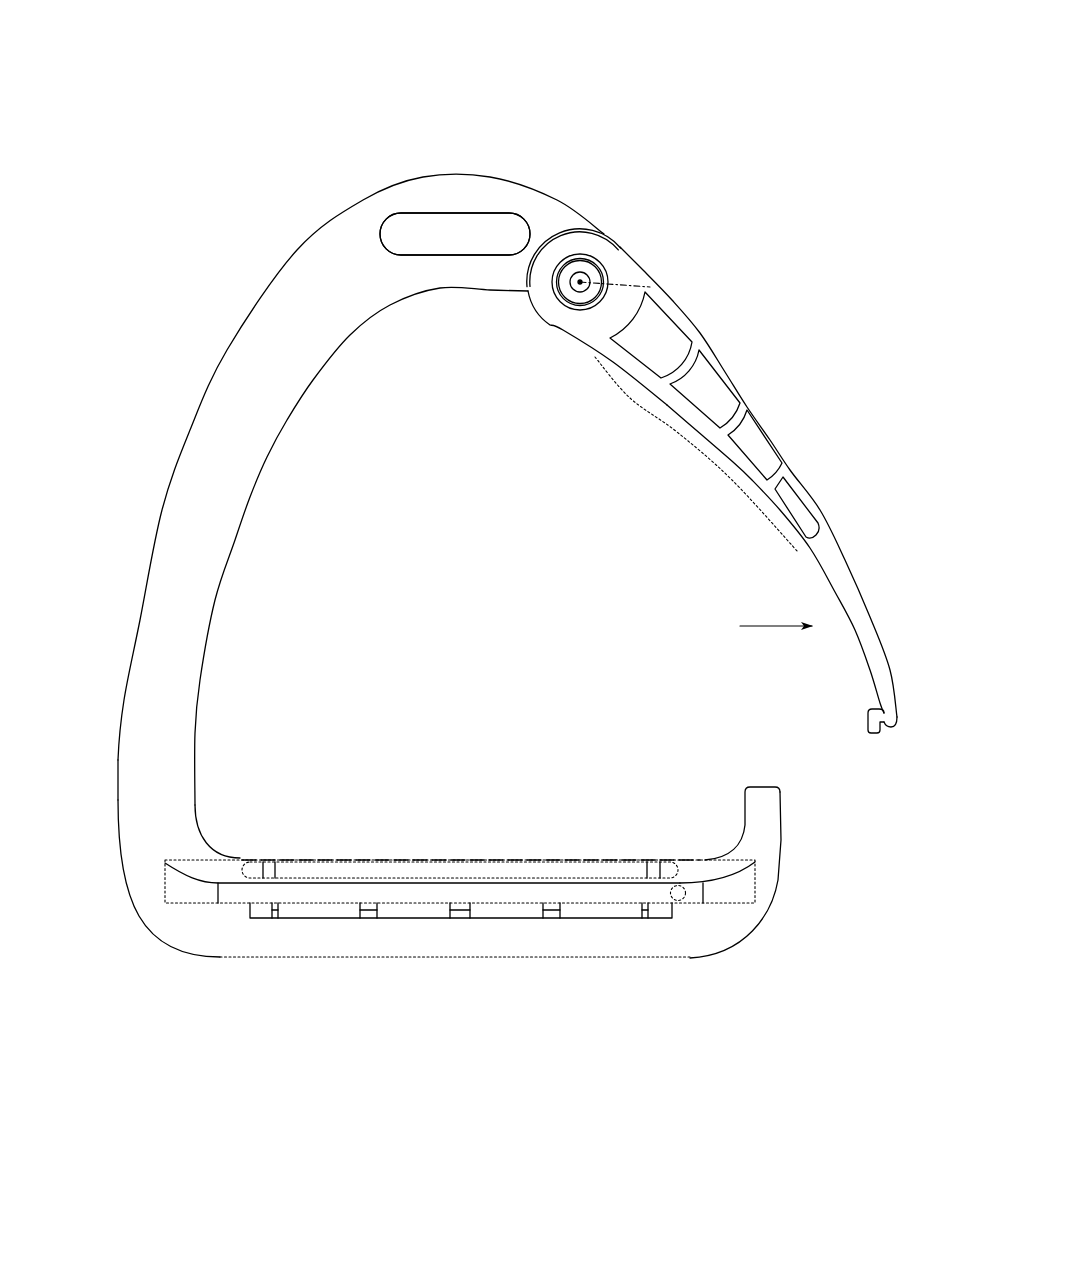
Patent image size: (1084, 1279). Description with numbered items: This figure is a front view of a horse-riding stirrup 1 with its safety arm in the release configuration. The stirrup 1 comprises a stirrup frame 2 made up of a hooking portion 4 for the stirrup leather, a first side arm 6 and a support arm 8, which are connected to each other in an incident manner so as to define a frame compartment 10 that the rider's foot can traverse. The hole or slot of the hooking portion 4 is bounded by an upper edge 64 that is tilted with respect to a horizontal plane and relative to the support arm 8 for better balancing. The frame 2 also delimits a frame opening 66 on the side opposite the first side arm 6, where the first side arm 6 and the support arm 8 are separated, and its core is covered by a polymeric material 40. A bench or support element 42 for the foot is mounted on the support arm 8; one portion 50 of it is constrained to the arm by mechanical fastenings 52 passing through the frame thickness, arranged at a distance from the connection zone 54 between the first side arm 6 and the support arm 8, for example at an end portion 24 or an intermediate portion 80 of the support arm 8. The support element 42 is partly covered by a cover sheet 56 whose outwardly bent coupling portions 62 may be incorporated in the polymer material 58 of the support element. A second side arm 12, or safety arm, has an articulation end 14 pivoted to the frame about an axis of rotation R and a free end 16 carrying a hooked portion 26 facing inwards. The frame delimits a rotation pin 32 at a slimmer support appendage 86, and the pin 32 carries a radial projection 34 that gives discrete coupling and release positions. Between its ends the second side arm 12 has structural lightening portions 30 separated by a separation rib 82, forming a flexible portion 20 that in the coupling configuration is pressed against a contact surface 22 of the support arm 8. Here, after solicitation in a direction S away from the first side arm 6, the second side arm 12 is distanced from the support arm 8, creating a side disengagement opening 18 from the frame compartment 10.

The horse-riding stirrup 1 is at (283, 125).
The stirrup frame 2 is at (200, 350).
The hooking portion 4 is at (495, 232).
The first side arm 6 is at (140, 600).
The support arm 8 is at (428, 958).
The frame compartment 10 is at (323, 517).
The second side arm 12 is at (704, 331).
The articulation end 14 is at (561, 331).
The free end 16 is at (908, 697).
The side disengagement opening 18 is at (853, 767).
The flexible portion 20 is at (696, 454).
The contact surface 22 is at (762, 787).
The end portion 24 is at (788, 848).
The hooked portion 26 is at (866, 712).
The structural lightening portions 30 is at (792, 497).
The rotation pin 32 is at (590, 266).
The radial projection 34 is at (605, 283).
The polymeric material 40 is at (128, 760).
The support element 42 is at (218, 905).
The portion of the support element 50 is at (680, 914).
The mechanical fastenings 52 is at (666, 896).
The connection zone 54 is at (152, 930).
The cover sheet 56 is at (366, 858).
The polymer material 58 is at (716, 872).
The coupling portions 62 is at (282, 872).
The upper edge 64 is at (432, 222).
The frame opening 66 is at (750, 565).
The intermediate portion 80 is at (486, 963).
The separation rib 82 is at (694, 371).
The support appendage 86 is at (597, 226).
The axis of rotation R is at (688, 233).
The direction S is at (776, 610).